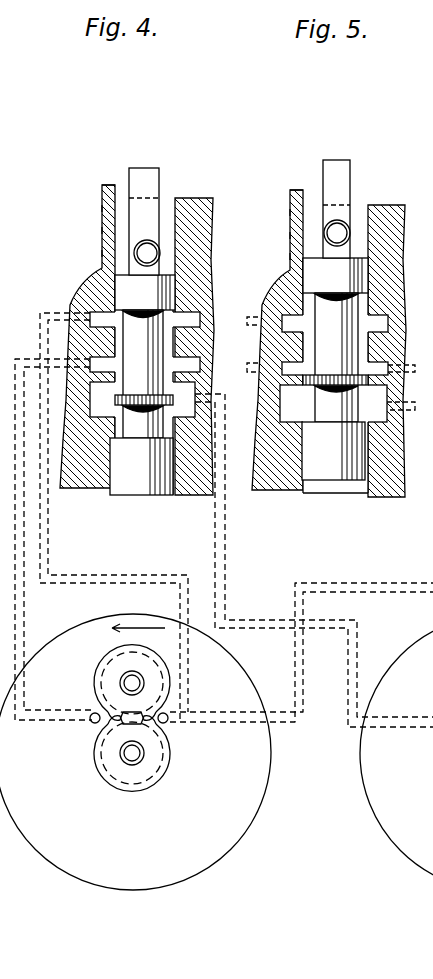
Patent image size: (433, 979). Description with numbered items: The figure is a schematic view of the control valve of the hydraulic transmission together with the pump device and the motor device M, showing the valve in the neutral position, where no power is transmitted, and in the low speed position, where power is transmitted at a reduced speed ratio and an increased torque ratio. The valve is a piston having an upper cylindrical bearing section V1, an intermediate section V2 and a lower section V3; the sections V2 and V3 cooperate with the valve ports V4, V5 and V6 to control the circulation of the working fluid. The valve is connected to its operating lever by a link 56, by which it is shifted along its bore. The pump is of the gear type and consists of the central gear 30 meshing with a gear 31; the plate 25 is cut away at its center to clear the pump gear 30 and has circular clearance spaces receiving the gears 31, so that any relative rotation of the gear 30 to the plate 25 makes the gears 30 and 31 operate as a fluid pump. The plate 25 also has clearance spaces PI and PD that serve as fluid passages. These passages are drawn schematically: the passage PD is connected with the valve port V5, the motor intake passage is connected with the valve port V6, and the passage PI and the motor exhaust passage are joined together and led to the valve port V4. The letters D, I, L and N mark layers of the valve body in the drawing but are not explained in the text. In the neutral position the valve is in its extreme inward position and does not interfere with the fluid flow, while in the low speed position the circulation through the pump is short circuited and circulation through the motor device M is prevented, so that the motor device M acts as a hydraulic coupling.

In FIG. 4, the link 56 is at (155, 183).
In FIG. 5, the link 56 is at (343, 176).
In FIG. 4, the layer D is at (102, 185).
In FIG. 5, the layer D is at (290, 190).
In FIG. 4, the layer I is at (115, 208).
In FIG. 5, the layer I is at (302, 212).
In FIG. 4, the layer L is at (115, 230).
In FIG. 5, the layer L is at (317, 239).
In FIG. 4, the layer N is at (125, 257).
In FIG. 5, the layer N is at (302, 256).
In FIG. 4, the upper cylindrical bearing section V1 is at (145, 292).
In FIG. 5, the upper cylindrical bearing section V1 is at (335, 275).
In FIG. 4, the intermediate section V2 is at (135, 392).
In FIG. 5, the intermediate section V2 is at (325, 377).
In FIG. 4, the lower section V3 is at (141, 466).
In FIG. 5, the lower section V3 is at (333, 451).
In FIG. 4, the valve port V4 is at (195, 320).
In FIG. 5, the valve port V4 is at (386, 322).
In FIG. 4, the valve port V5 is at (195, 365).
In FIG. 5, the valve port V5 is at (385, 368).
In FIG. 4, the valve port V6 is at (193, 398).
In FIG. 5, the valve port V6 is at (378, 400).
In FIG. 4, the plate 25 is at (98, 888).
In FIG. 4, the gear 31 is at (110, 677).
In FIG. 4, the central gear 30 is at (153, 761).
In FIG. 4, the clearance space PI is at (166, 723).
In FIG. 4, the clearance space PD is at (96, 727).
In FIG. 5, the motor device M is at (396, 753).